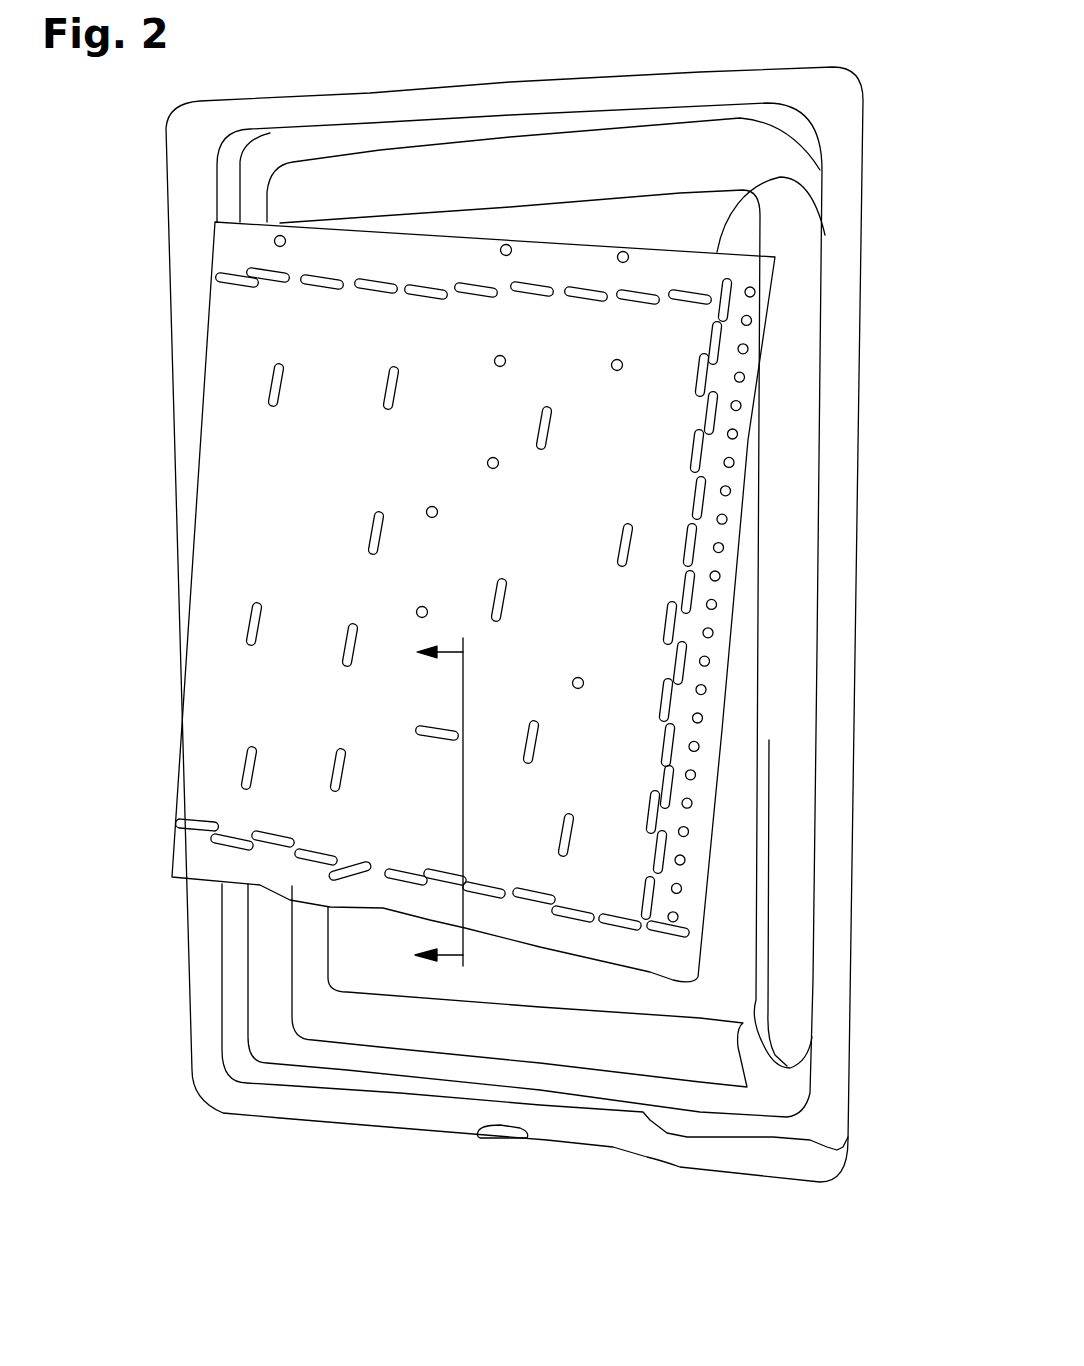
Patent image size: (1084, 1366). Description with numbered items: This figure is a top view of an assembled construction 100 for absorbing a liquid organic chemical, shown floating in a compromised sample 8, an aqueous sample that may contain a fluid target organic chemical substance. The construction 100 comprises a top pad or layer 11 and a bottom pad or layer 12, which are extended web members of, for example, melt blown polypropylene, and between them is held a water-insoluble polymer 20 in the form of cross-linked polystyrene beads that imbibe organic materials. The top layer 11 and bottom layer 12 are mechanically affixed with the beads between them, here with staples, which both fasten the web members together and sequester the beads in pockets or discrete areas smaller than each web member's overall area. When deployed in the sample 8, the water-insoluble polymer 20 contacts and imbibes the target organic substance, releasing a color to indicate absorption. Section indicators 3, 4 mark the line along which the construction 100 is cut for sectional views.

The construction for absorbing a fluid organic chemical 100 is at (639, 212).
The compromised sample 8 is at (547, 1142).
The top pad or layer 11 is at (252, 333).
The bottom pad or layer 12 is at (825, 235).
The water-insoluble polymer 20 is at (745, 563).
The section line III 3 is at (468, 804).
The section line IV 4 is at (468, 804).